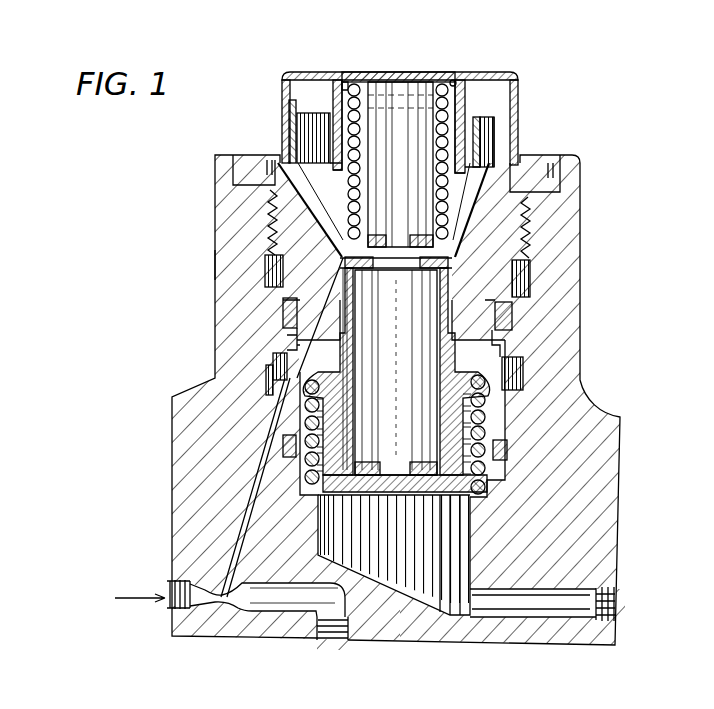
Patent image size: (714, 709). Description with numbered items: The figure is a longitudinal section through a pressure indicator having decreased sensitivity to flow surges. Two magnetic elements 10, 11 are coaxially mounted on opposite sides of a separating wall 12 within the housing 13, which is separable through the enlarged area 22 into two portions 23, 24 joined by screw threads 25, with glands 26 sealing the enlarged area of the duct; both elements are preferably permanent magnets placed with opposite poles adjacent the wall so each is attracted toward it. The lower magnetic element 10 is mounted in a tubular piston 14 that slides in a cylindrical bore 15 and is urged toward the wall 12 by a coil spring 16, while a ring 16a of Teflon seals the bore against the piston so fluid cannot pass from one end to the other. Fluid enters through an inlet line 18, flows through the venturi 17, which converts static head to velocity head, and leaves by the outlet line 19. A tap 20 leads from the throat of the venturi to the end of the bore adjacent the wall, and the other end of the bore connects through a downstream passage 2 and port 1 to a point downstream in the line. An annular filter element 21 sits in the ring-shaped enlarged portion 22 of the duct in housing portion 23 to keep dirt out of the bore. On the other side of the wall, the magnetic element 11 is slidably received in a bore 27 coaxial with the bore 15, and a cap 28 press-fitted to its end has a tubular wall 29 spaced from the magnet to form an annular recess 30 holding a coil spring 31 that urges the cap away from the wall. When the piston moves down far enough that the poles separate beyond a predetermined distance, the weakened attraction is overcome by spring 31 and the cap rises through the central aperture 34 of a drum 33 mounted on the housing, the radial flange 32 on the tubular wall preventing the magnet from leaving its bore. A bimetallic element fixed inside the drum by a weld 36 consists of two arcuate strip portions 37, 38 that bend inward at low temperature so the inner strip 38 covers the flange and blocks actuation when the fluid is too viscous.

The port 1 is at (610, 605).
The downstream passage 2 is at (568, 614).
The magnetic element 10 is at (406, 385).
The magnetic element 11 is at (412, 170).
The separating wall 12 is at (455, 245).
The housing 13 is at (204, 303).
The tubular piston 14 is at (348, 328).
The cylindrical bore 15 is at (455, 250).
The coil spring 16 is at (466, 494).
The ring 16a is at (346, 352).
The venturi 17 is at (227, 600).
The inlet line 18 is at (168, 603).
The outlet line 19 is at (333, 636).
The tap 20 is at (240, 523).
The filter element 21 is at (272, 375).
The enlarged portion 22 is at (282, 360).
The housing portion 23 is at (228, 262).
The housing portion 24 is at (283, 236).
The screw threads 25 is at (283, 238).
The glands 26 is at (283, 315).
The bore 27 is at (380, 240).
The cap 28 is at (422, 68).
The tubular wall 29 is at (330, 82).
The annular recess 30 is at (456, 80).
The coil spring 31 is at (352, 206).
The radial flange 32 is at (456, 222).
The drum 33 is at (293, 80).
The central aperture 34 is at (343, 80).
The weld 36 is at (289, 135).
The arcuate strip portion 37 is at (292, 122).
The arcuate strip portion 38 is at (477, 119).